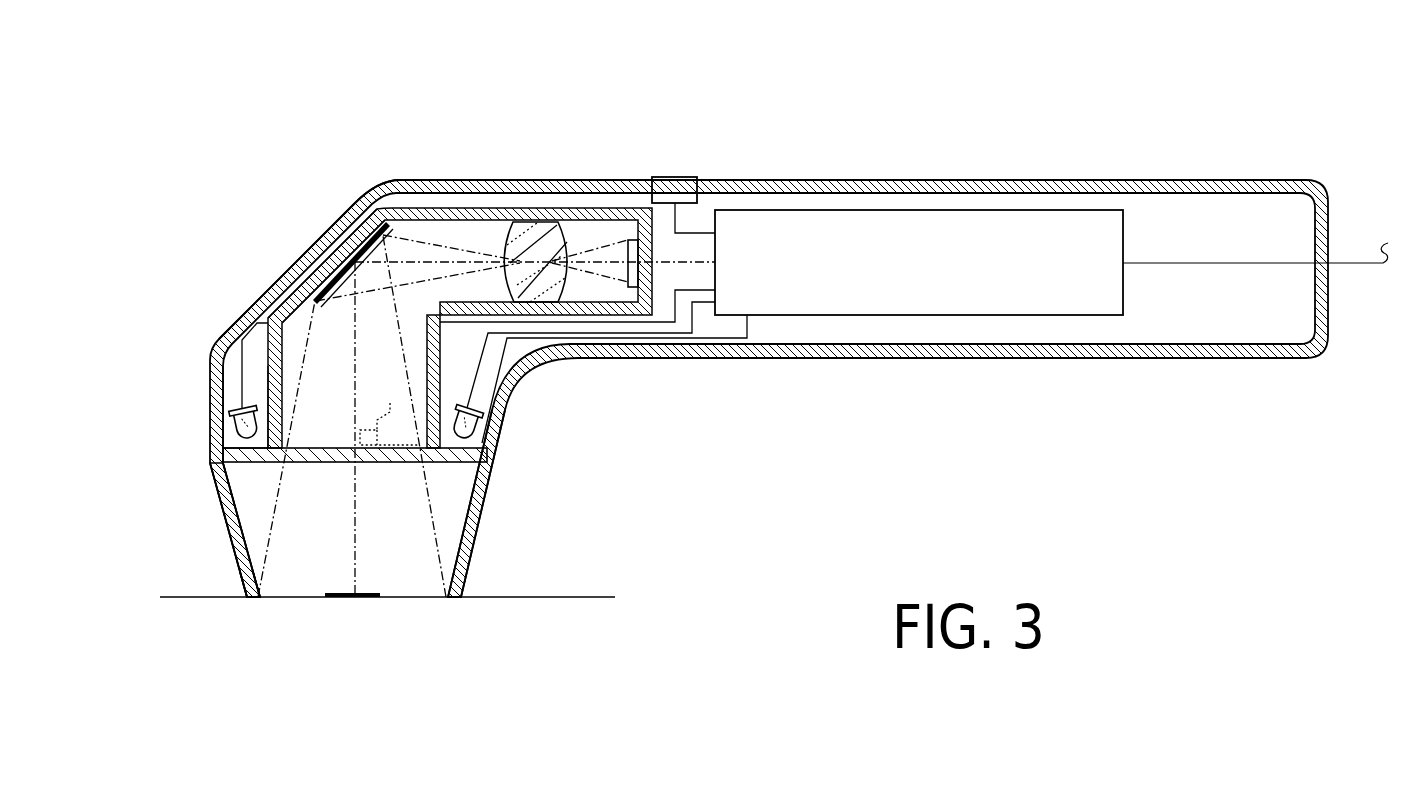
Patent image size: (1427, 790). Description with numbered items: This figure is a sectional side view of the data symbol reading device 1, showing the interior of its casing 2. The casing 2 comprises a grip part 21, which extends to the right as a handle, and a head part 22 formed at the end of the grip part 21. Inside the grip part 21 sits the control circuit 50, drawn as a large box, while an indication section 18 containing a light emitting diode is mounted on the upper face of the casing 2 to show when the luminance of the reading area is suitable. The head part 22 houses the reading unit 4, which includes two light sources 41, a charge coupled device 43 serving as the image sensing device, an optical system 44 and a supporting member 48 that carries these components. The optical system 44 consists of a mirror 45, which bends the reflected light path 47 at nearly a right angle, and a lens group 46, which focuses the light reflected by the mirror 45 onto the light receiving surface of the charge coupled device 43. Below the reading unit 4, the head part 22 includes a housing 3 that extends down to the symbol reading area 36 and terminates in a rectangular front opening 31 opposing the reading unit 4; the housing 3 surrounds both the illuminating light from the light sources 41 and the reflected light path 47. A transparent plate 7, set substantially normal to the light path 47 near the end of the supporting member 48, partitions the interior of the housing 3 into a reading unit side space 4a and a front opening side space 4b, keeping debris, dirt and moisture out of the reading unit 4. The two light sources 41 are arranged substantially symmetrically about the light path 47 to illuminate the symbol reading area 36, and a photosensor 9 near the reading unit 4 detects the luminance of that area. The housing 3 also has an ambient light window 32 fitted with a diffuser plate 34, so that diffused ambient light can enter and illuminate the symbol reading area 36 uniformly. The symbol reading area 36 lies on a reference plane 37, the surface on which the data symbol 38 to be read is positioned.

The data symbol reading device 1 is at (988, 124).
The casing 2 is at (1084, 180).
The housing 3 is at (478, 538).
The reading unit 4 is at (355, 244).
The reading unit side space 4a is at (320, 387).
The front opening side space 4b is at (250, 485).
The transparent plate 7 is at (337, 465).
The photosensor 9 is at (390, 412).
The indication section 18 is at (684, 188).
The grip part 21 is at (1075, 357).
The head part 22 is at (363, 192).
The front opening 31 is at (425, 597).
The ambient light window 32 is at (224, 528).
The diffuser plate 34 is at (240, 572).
The symbol reading area 36 is at (285, 597).
The reference plane 37 is at (592, 595).
The data symbol 38 is at (332, 592).
The light source 41 is at (250, 430).
The charge coupled device (CCD) 43 is at (631, 241).
The optical system 44 is at (537, 224).
The mirror 45 is at (333, 268).
The lens group 46 is at (513, 245).
The light path 47 is at (356, 535).
The supporting member 48 is at (405, 210).
The control circuit 50 is at (880, 235).